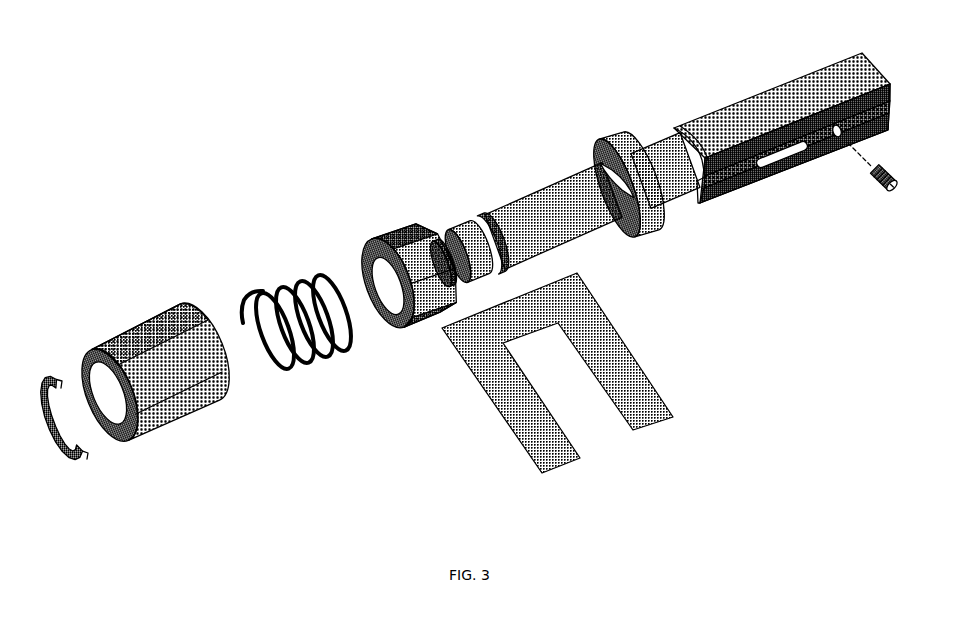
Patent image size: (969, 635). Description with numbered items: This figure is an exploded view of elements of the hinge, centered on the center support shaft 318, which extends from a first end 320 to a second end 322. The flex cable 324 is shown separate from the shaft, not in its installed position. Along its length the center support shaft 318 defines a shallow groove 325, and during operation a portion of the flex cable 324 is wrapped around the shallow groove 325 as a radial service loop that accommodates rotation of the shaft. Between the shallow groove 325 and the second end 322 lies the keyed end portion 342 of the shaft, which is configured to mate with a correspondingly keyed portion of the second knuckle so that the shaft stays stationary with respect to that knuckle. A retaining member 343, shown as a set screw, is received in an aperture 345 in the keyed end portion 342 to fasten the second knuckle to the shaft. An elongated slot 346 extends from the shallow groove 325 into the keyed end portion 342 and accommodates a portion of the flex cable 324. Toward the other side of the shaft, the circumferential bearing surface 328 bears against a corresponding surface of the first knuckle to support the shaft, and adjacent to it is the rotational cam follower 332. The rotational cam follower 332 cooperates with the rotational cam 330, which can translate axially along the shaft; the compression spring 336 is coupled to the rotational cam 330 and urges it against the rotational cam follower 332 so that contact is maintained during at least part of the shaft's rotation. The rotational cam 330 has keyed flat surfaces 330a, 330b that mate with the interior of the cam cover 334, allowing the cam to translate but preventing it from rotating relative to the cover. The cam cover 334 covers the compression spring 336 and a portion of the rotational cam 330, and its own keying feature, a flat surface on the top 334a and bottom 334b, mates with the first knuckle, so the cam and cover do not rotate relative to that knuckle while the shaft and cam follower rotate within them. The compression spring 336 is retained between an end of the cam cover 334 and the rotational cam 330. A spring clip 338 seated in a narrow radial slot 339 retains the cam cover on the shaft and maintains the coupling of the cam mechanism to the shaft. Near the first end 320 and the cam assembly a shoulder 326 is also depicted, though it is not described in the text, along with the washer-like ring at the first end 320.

The center support shaft 318 is at (729, 59).
The first end 320 is at (440, 272).
The second end 322 is at (798, 131).
The flex cable 324 is at (615, 327).
The shallow groove 325 is at (653, 142).
The shaft end portion 326 is at (466, 233).
The circumferential bearing surface 328 is at (615, 203).
The rotational cam 330 is at (387, 287).
The flat surface 330a is at (385, 233).
The flat surface 330b is at (388, 318).
The rotational cam follower 332 is at (611, 172).
The cam cover 334 is at (166, 379).
The top flat surface 334a is at (157, 327).
The bottom flat surface 334b is at (117, 433).
The compression spring 336 is at (271, 286).
The spring clip 338 is at (56, 378).
The narrow radial slot 339 is at (488, 208).
The keyed end portion 342 is at (830, 156).
The retaining member 343 is at (891, 194).
The aperture 345 is at (843, 134).
The elongated slot 346 is at (727, 176).